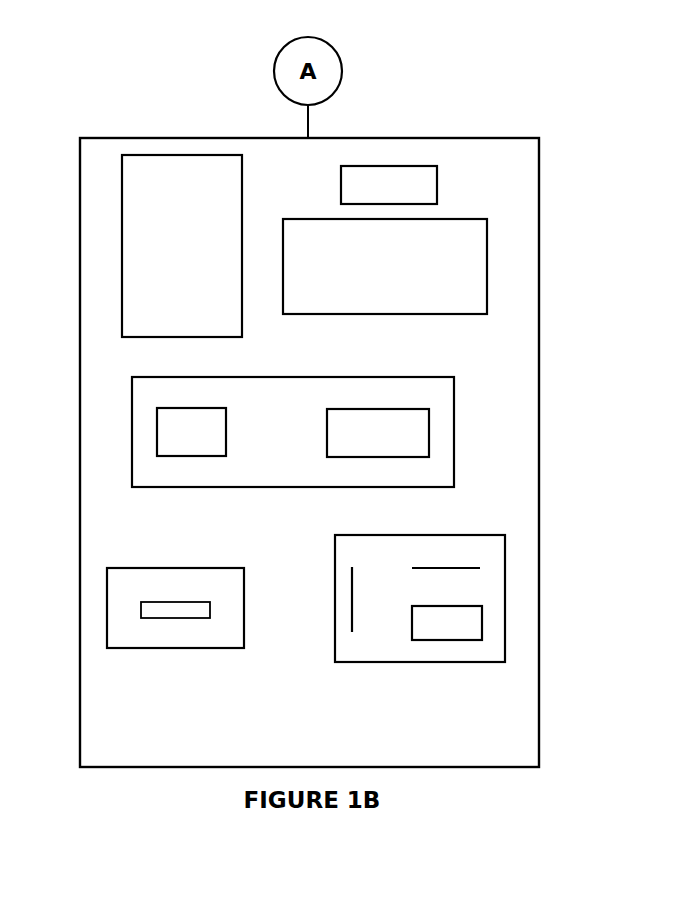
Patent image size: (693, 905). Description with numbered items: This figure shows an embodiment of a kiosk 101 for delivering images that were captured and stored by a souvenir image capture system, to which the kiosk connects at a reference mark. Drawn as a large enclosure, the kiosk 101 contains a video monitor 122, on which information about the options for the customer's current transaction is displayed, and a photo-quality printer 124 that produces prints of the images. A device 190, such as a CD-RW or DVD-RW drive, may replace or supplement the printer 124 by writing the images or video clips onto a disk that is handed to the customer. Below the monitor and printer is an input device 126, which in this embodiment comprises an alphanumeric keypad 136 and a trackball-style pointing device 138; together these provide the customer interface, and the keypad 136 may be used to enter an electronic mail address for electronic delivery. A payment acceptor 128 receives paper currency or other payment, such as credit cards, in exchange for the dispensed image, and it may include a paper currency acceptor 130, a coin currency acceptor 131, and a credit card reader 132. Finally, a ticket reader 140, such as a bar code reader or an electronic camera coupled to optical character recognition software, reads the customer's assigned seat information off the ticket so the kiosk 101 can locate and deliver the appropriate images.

The kiosk 101 is at (514, 124).
The video monitor 122 is at (182, 246).
The device 190 is at (516, 331).
The photo-quality printer 124 is at (385, 266).
The input device 126 is at (292, 432).
The trackball-style pointing device 138 is at (191, 432).
The alphanumeric keypad 136 is at (378, 433).
The payment acceptor 128 is at (395, 550).
The coin currency acceptor 131 is at (450, 567).
The paper currency acceptor 130 is at (482, 622).
The credit card reader 132 is at (352, 583).
The ticket reader 140 is at (210, 635).